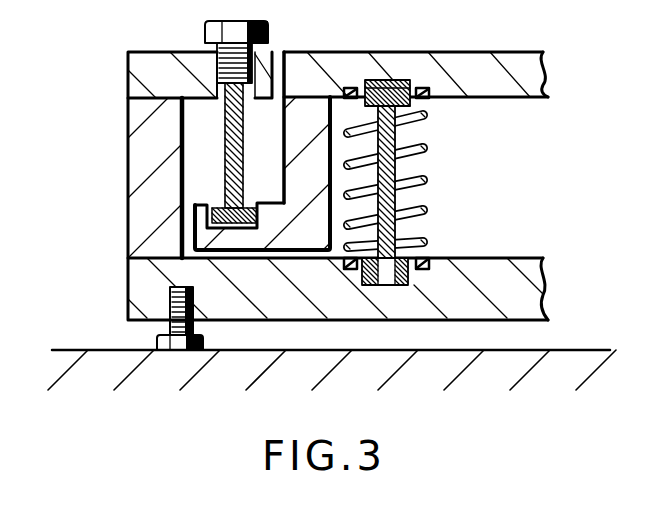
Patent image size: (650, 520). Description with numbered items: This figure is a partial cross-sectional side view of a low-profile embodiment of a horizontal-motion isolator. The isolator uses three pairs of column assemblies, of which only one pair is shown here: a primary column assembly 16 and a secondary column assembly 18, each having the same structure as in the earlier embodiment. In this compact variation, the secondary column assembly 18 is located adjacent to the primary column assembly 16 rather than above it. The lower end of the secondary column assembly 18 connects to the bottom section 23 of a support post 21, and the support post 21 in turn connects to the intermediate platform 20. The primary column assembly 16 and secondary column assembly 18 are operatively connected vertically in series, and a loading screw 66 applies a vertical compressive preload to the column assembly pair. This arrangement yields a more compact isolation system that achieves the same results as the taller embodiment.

The primary column assembly 16 is at (466, 200).
The secondary column assembly 18 is at (196, 136).
The intermediate platform 20 is at (447, 52).
The support post 21 is at (283, 176).
The bottom section 23 is at (194, 230).
The loading screw 66 is at (268, 26).